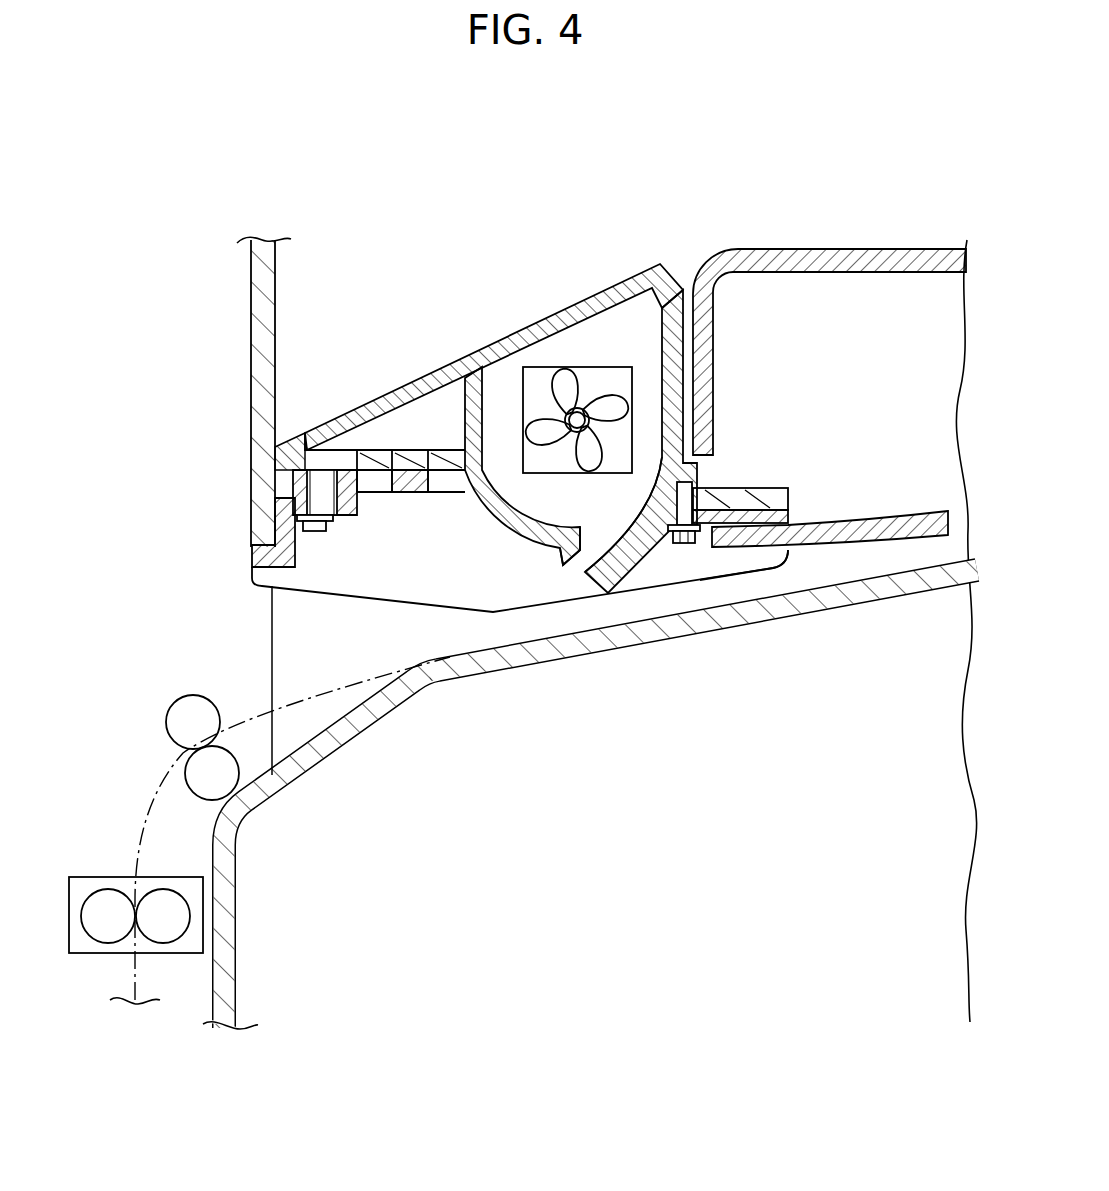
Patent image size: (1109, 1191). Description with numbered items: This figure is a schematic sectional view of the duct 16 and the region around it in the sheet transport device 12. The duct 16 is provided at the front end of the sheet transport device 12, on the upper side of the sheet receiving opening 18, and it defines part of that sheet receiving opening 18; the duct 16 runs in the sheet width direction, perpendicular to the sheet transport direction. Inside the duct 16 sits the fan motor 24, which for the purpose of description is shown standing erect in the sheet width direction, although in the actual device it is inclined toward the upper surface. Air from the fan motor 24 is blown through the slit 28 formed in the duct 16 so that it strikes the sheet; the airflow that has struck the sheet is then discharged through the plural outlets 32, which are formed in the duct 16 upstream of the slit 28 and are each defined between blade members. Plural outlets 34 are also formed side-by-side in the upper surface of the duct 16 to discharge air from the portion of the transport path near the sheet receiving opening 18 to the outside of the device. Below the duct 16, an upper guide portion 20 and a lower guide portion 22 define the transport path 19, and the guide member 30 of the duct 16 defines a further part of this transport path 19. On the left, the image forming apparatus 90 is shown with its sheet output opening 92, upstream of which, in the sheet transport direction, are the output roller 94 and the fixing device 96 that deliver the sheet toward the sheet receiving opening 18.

The sheet transport device 12 is at (880, 244).
The duct 16 is at (564, 298).
The sheet receiving opening 18 is at (283, 677).
The transport path 19 is at (720, 586).
The upper guide portion 20 is at (870, 550).
The lower guide portion 22 is at (801, 572).
The fan motor 24 is at (581, 370).
The slit 28 is at (575, 562).
The guide member 30 is at (400, 604).
The outlets 32 is at (388, 480).
The outlets 34 is at (410, 388).
The image forming apparatus 90 is at (75, 212).
The sheet output opening 92 is at (270, 637).
The output roller 94 is at (168, 710).
The fixing device 96 is at (101, 877).